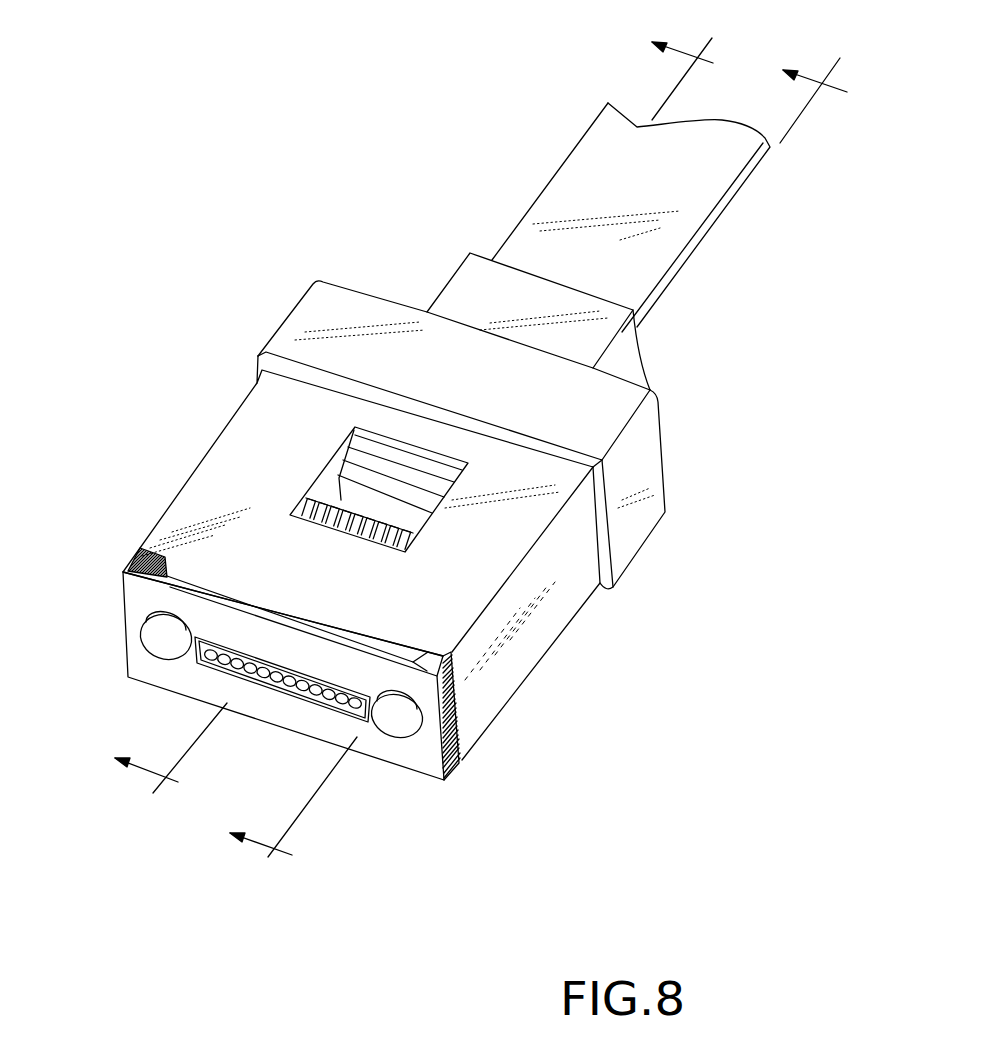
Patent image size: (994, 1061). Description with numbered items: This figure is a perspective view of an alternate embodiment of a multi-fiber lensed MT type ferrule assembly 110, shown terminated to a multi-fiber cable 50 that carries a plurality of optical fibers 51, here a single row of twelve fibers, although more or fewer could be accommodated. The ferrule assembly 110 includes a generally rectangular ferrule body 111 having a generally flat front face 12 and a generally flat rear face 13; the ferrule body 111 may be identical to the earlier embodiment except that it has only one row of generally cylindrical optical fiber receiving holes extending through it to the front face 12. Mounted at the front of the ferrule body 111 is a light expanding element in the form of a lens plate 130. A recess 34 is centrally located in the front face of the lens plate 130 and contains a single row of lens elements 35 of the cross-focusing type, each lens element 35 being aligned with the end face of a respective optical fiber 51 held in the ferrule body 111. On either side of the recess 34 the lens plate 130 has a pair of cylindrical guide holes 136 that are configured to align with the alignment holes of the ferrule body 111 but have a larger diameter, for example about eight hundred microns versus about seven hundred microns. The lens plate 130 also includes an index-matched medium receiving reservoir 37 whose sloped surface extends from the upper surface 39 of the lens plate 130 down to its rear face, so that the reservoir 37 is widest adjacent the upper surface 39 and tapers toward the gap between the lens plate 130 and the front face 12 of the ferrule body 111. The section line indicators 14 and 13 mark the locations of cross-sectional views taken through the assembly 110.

The ferrule assembly 110 is at (446, 436).
The front face 12 is at (394, 506).
The rear face 13 is at (348, 95).
The section line 14 is at (400, 403).
The multi-fiber cable 50 is at (690, 193).
The optical fibers 51 is at (340, 497).
The index-matched medium receiving reservoir 37 is at (184, 583).
The upper surface 39 is at (136, 553).
The ferrule body 111 is at (530, 620).
The lens plate 130 is at (269, 637).
The guide holes 136 is at (140, 656).
The recess 34 is at (283, 740).
The lens elements 35 is at (263, 674).